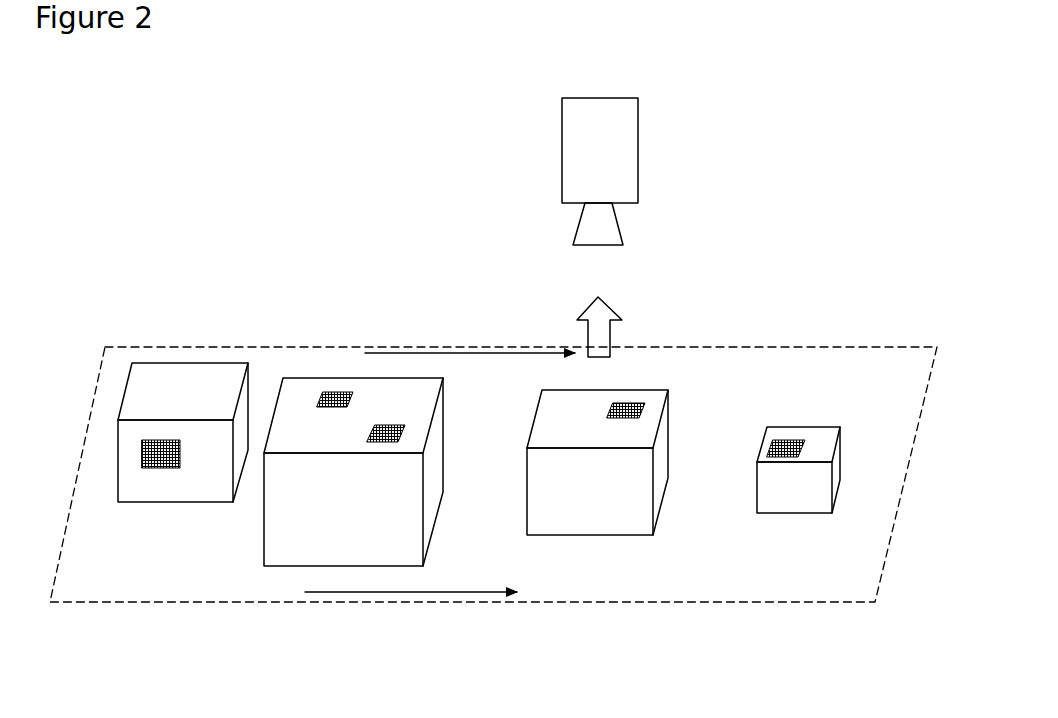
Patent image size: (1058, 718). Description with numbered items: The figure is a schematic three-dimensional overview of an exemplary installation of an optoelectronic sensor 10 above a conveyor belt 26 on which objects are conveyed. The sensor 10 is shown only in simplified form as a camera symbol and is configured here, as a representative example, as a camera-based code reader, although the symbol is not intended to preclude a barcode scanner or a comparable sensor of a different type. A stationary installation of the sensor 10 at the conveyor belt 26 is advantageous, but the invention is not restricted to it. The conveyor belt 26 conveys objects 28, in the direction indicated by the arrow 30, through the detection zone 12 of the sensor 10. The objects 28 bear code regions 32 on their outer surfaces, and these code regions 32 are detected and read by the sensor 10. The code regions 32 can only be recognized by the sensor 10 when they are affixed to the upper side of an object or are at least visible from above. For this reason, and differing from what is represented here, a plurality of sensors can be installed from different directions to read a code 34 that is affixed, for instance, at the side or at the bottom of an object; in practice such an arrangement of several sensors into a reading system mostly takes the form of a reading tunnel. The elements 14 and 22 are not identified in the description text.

The sensor 10 is at (607, 122).
The detection zone 12 is at (675, 318).
The image capture direction arrow 14 is at (597, 312).
The label on side of package 22 is at (152, 455).
The conveyor belt 26 is at (842, 602).
The objects 28 is at (630, 515).
The arrow 30 is at (392, 592).
The code regions 32 is at (382, 427).
The code 34 is at (280, 540).